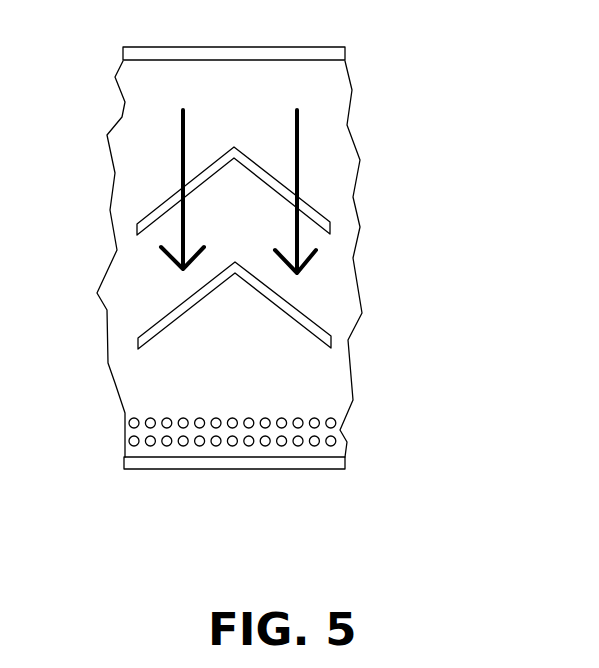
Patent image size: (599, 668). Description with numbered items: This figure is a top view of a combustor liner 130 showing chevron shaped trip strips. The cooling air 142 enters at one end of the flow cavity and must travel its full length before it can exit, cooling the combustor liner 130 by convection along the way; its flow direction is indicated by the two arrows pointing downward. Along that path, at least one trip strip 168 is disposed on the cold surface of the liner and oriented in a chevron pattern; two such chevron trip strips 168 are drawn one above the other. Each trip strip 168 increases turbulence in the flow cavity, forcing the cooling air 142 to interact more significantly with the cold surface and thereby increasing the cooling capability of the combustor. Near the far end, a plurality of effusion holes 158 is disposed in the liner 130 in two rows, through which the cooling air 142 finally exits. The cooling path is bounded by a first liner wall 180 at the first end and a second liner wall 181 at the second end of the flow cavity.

The combustor liner 130 is at (278, 259).
The cooling air 142 is at (180, 133).
The effusion holes 158 is at (297, 446).
The trip strip 168 is at (331, 224).
The first liner wall 180 is at (325, 57).
The second liner wall 181 is at (318, 463).